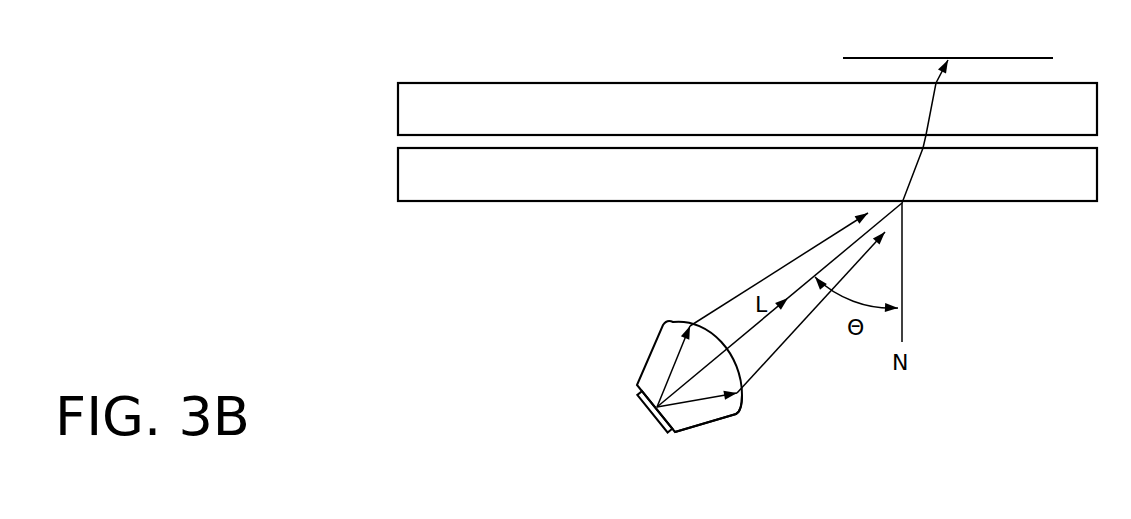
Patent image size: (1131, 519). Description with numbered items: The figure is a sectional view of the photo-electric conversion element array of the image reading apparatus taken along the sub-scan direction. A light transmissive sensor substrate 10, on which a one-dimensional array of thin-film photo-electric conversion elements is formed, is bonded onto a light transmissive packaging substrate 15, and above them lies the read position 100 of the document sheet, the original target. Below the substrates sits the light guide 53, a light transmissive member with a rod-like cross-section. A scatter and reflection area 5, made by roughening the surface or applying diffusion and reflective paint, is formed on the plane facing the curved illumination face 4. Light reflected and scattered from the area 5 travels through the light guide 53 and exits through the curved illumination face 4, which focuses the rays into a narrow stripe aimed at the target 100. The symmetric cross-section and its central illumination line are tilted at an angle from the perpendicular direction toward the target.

The light transmissive sensor substrate 10 is at (497, 83).
The light transmissive packaging substrate 15 is at (493, 201).
The read position of the document sheet 100 is at (1010, 57).
The illumination face 4 is at (679, 324).
The scatter and reflection area 5 is at (647, 421).
The light guide 53 is at (717, 428).